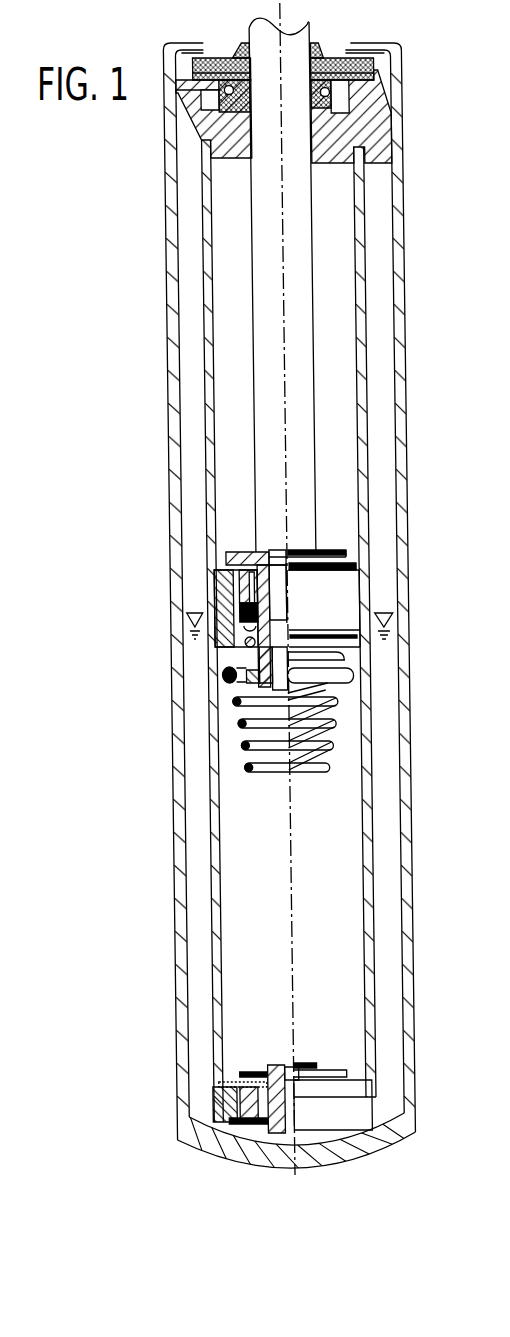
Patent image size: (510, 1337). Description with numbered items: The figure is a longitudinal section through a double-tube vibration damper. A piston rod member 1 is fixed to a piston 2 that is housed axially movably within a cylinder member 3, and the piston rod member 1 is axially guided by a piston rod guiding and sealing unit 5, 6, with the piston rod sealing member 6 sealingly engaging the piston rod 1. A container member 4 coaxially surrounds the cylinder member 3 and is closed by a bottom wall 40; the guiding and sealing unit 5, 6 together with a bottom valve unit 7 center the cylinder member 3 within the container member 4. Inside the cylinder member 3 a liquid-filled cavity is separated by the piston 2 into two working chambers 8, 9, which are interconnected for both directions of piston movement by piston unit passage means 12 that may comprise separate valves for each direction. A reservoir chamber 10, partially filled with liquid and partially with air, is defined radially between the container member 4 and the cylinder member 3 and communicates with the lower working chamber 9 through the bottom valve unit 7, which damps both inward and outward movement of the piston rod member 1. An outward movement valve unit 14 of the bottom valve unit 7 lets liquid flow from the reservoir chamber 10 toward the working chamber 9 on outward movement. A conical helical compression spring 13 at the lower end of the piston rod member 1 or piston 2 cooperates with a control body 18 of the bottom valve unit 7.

The piston rod member 1 is at (295, 208).
The piston 2 is at (215, 578).
The cylinder member 3 is at (356, 317).
The container member 4 is at (393, 387).
The piston rod guiding unit 5 is at (369, 112).
The piston rod sealing member 6 is at (370, 61).
The bottom valve unit 7 is at (208, 1110).
The first working chamber 8 is at (337, 263).
The second working chamber 9 is at (334, 830).
The reservoir chamber 10 is at (377, 768).
The piston unit passage means 12 is at (220, 561).
The conical helical compression spring 13 is at (338, 702).
The outward movement valve unit 14 is at (226, 1076).
The control body 18 is at (267, 1068).
The bottom wall 40 is at (227, 1149).